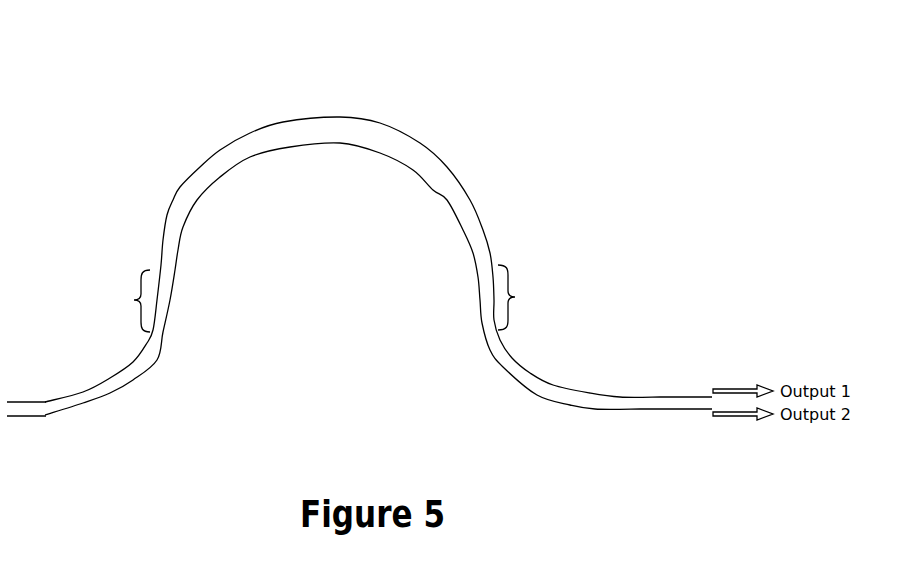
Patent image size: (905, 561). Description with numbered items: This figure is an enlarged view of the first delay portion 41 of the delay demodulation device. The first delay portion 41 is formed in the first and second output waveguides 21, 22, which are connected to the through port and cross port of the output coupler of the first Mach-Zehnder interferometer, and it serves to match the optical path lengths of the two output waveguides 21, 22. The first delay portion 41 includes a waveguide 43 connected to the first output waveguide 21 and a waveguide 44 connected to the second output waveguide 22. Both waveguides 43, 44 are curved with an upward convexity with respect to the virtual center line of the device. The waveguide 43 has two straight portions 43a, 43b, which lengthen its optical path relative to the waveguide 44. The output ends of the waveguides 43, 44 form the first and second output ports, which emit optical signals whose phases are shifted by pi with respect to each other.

The first delay portion 41 is at (364, 120).
The waveguide 43 is at (421, 141).
The waveguide 44 is at (422, 174).
The straight portion 43a is at (133, 300).
The straight portion 43b is at (517, 297).
The first output waveguide 21 is at (50, 401).
The second output waveguide 22 is at (35, 417).